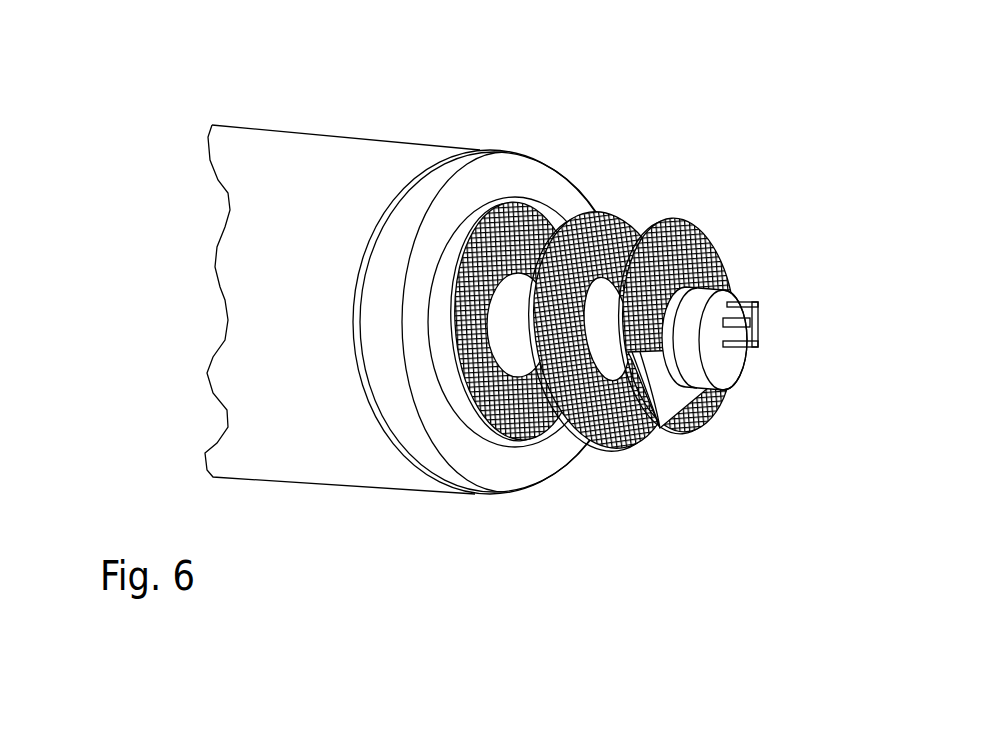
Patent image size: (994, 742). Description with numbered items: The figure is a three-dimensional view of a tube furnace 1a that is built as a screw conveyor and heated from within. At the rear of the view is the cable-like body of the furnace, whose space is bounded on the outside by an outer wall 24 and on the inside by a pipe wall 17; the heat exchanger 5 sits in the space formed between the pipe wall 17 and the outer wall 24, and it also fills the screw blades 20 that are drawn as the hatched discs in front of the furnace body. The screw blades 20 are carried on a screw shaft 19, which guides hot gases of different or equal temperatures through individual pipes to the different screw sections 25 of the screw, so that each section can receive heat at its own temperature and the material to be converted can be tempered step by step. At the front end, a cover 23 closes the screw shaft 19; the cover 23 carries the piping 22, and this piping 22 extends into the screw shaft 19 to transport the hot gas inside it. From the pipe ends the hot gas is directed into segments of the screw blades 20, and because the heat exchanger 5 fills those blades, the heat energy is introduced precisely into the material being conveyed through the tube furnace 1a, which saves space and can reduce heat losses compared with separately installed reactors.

The outer wall 24 is at (326, 131).
The screw section 25 is at (533, 176).
The pipe wall 17 is at (512, 441).
The screw blade 20 is at (609, 448).
The screw shaft 19 is at (609, 302).
The heat exchanger 5 is at (696, 234).
The cover 23 is at (737, 370).
The piping 22 is at (762, 326).
The tube furnace 1a is at (665, 344).